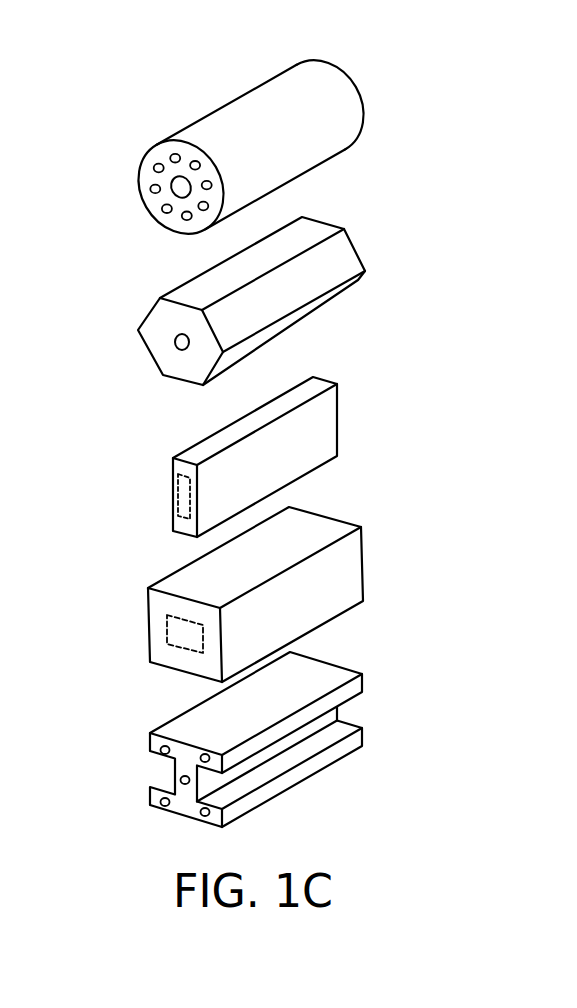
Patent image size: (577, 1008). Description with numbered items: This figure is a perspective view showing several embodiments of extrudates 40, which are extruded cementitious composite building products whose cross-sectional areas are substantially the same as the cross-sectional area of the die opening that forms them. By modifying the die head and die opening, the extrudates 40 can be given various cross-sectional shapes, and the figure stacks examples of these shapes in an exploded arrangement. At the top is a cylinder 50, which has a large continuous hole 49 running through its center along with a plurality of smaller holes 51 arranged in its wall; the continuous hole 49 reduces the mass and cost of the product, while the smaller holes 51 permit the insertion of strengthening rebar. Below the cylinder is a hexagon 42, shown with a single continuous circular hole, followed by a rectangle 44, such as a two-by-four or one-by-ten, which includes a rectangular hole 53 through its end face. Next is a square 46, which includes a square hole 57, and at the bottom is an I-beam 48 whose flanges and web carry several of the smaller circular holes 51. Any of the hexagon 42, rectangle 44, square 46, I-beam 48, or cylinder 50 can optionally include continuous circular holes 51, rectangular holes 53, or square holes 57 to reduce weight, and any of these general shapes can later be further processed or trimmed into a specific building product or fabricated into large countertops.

The extrudates 40 is at (485, 358).
The hexagon 42 is at (358, 250).
The rectangle 44 is at (338, 417).
The square 46 is at (368, 560).
The I-beam 48 is at (368, 682).
The continuous hole 49 is at (172, 183).
The cylinder 50 is at (357, 87).
The continuous circular holes 51 is at (180, 147).
The rectangular holes 53 is at (177, 507).
The square holes 57 is at (168, 620).